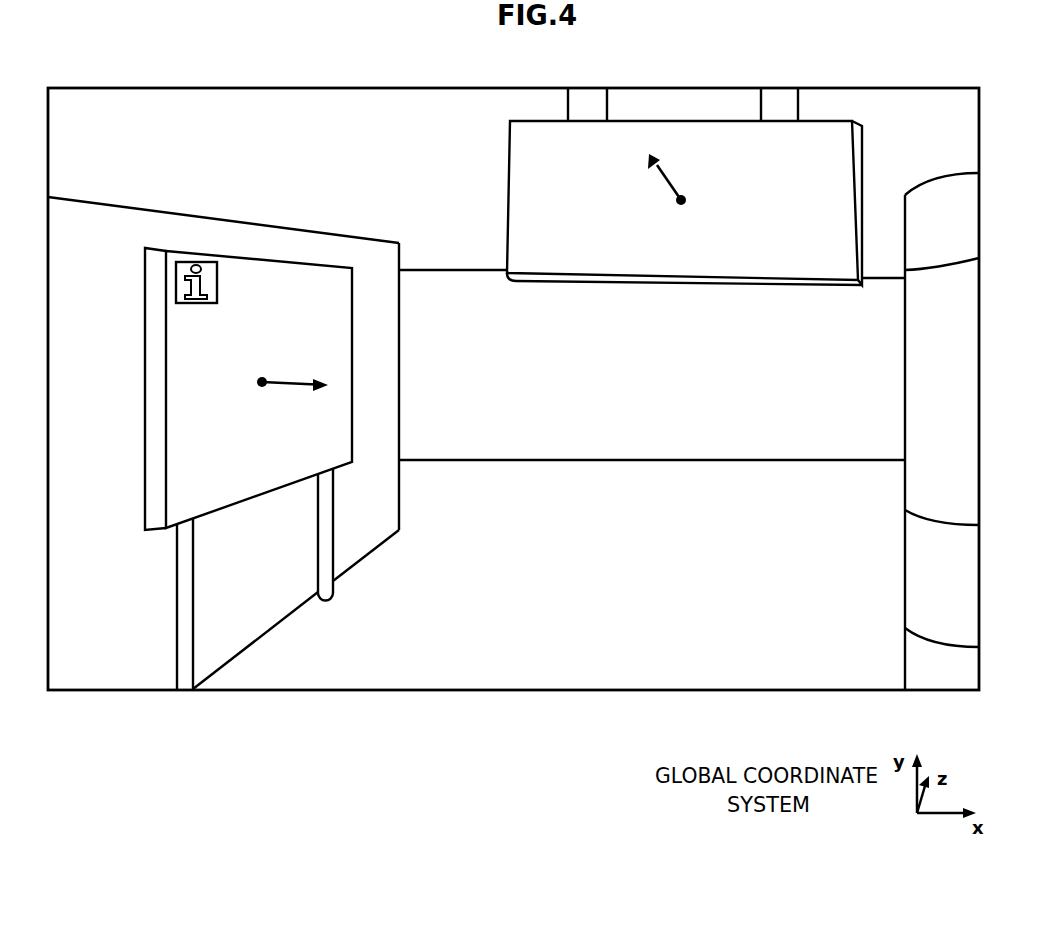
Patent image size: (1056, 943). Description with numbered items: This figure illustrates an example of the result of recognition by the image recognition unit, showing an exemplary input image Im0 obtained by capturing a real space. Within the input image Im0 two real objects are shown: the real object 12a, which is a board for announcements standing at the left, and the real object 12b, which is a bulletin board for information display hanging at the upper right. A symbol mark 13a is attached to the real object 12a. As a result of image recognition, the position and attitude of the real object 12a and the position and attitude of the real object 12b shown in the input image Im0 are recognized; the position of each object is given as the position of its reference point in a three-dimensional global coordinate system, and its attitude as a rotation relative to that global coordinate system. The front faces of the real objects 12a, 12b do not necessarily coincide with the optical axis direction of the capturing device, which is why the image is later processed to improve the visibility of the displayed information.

The input image Im0 is at (890, 88).
The real object 12a is at (307, 277).
The real object 12b is at (838, 133).
The symbol mark 13a is at (212, 273).